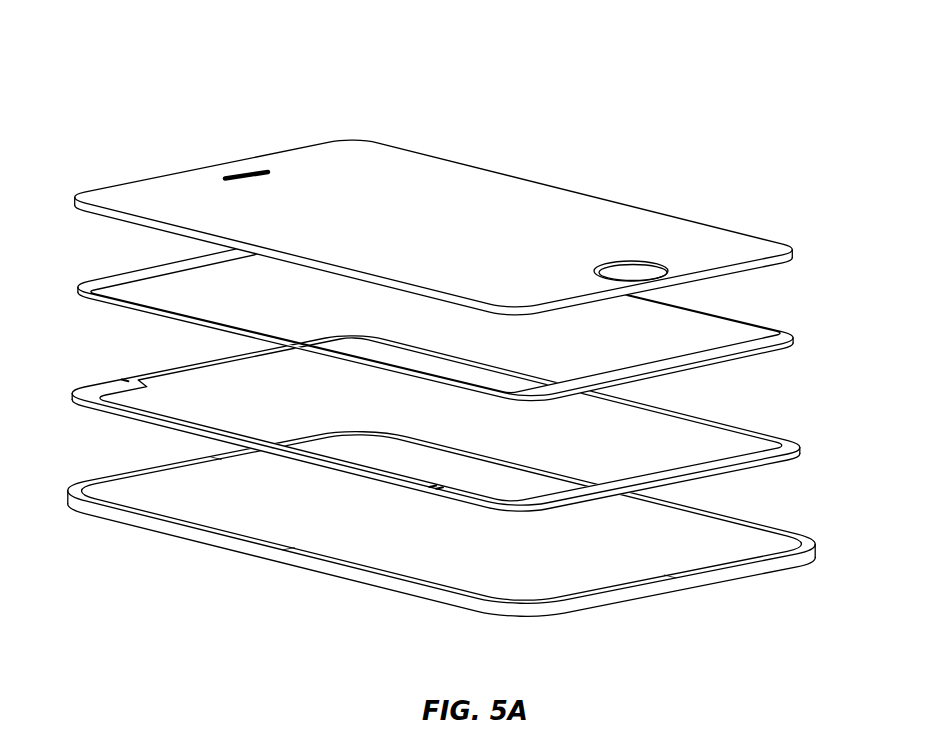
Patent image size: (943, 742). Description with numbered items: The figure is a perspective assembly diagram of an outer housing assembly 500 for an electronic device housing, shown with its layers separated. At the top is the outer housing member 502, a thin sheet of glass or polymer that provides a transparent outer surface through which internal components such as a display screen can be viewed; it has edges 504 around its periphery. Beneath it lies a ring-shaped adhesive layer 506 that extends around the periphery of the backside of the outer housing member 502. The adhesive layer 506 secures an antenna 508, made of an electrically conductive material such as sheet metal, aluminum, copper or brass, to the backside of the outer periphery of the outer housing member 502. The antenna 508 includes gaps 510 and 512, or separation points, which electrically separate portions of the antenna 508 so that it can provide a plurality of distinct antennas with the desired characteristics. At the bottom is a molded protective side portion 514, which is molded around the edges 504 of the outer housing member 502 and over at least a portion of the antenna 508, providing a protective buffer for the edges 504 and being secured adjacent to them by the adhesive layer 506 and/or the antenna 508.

The outer housing assembly 500 is at (460, 77).
The outer housing member 502 is at (175, 195).
The edges 504 is at (84, 205).
The adhesive layer 506 is at (142, 309).
The antenna 508 is at (238, 353).
The gap 510 is at (120, 368).
The gap 512 is at (439, 474).
The molded protective side portion 514 is at (222, 534).